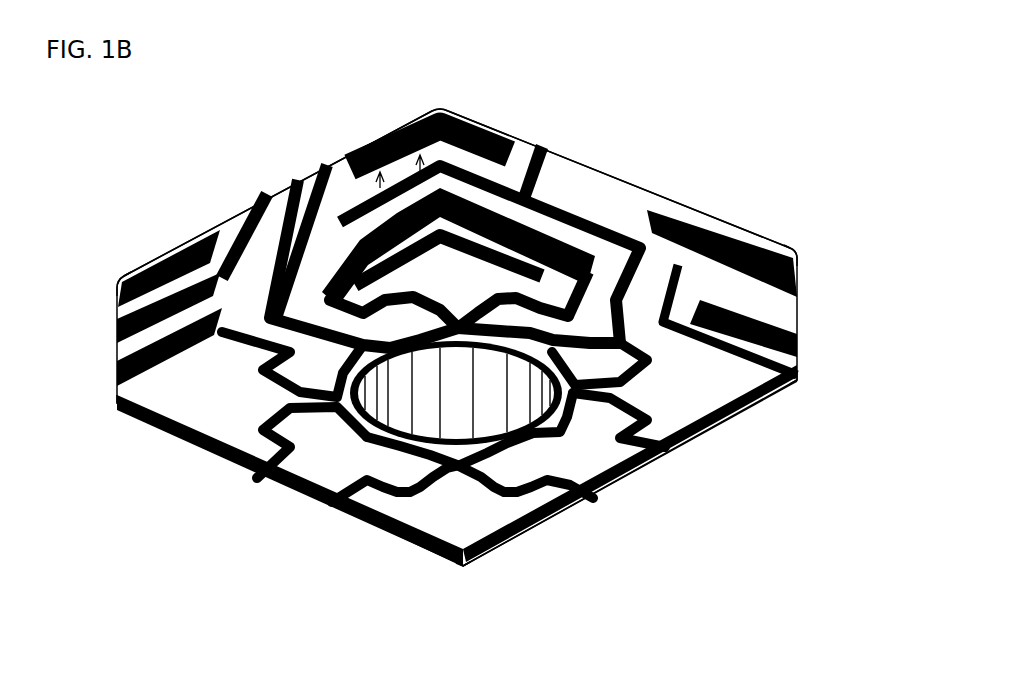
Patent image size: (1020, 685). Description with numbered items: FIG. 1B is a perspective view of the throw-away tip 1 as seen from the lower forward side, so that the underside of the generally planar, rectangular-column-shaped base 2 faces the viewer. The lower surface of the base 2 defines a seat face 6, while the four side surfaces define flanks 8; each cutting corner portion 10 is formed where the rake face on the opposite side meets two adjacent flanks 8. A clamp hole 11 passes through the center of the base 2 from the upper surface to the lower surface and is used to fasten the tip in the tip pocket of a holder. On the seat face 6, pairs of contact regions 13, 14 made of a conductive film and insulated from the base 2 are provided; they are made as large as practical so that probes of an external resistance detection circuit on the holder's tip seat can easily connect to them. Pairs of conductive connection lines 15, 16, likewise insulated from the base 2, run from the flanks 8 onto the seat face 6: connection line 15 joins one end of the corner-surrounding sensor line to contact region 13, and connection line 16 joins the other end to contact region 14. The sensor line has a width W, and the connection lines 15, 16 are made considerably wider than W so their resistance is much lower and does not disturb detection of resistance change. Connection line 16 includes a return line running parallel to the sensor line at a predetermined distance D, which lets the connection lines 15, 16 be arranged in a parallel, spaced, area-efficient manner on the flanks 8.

The throw-away tip 1 is at (699, 143).
The base 2 is at (748, 233).
The seat face 6 is at (582, 508).
The flank 8 is at (157, 258).
The cutting corner portion 10 is at (104, 276).
The clamp hole 11 is at (378, 420).
The contact region 13 is at (307, 377).
The contact region 14 is at (406, 320).
The connection line 15 is at (309, 245).
The connection line 16 is at (347, 245).
The width of the sensor line W is at (389, 117).
The predetermined distance D is at (425, 104).